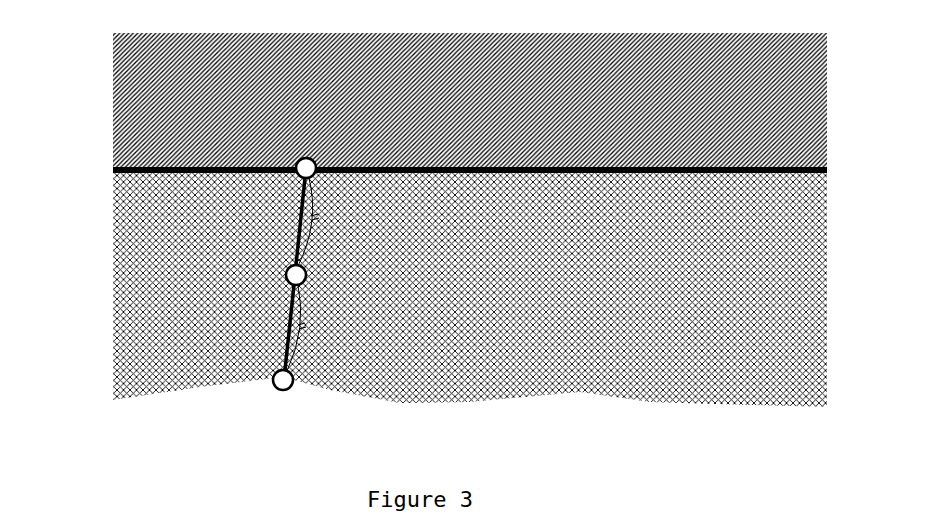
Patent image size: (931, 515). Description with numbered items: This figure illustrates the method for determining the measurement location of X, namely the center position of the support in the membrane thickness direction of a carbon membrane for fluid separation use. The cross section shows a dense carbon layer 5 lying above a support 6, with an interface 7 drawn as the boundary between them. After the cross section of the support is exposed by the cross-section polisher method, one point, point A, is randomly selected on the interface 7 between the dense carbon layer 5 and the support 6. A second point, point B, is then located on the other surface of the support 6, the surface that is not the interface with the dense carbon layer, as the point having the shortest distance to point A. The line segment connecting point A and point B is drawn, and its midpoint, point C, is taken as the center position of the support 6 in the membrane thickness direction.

The dense carbon layer 5 is at (470, 100).
The support 6 is at (470, 289).
The interface 7 is at (98, 170).
The point A is at (294, 151).
The point B is at (273, 354).
The point C is at (283, 237).